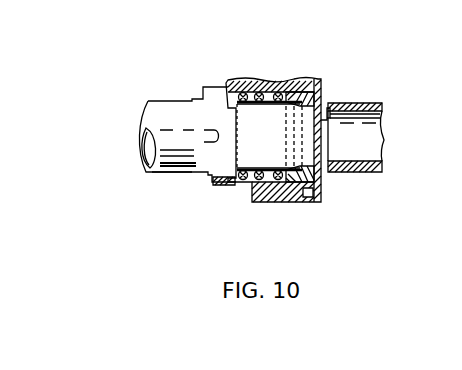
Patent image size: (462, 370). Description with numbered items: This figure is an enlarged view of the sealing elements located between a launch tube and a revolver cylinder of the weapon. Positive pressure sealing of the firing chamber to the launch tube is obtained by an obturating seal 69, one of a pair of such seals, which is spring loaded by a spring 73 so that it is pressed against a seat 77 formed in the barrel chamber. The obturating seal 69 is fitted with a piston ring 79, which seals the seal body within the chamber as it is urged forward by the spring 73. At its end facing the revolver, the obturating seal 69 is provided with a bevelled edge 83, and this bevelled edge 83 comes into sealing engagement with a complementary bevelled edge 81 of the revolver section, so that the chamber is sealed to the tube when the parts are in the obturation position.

The obturating seal 69 is at (311, 170).
The spring 73 is at (273, 155).
The seat 77 is at (256, 80).
The piston ring 79 is at (284, 134).
The bevelled edge 81 is at (356, 157).
The bevelled edge 83 is at (226, 188).